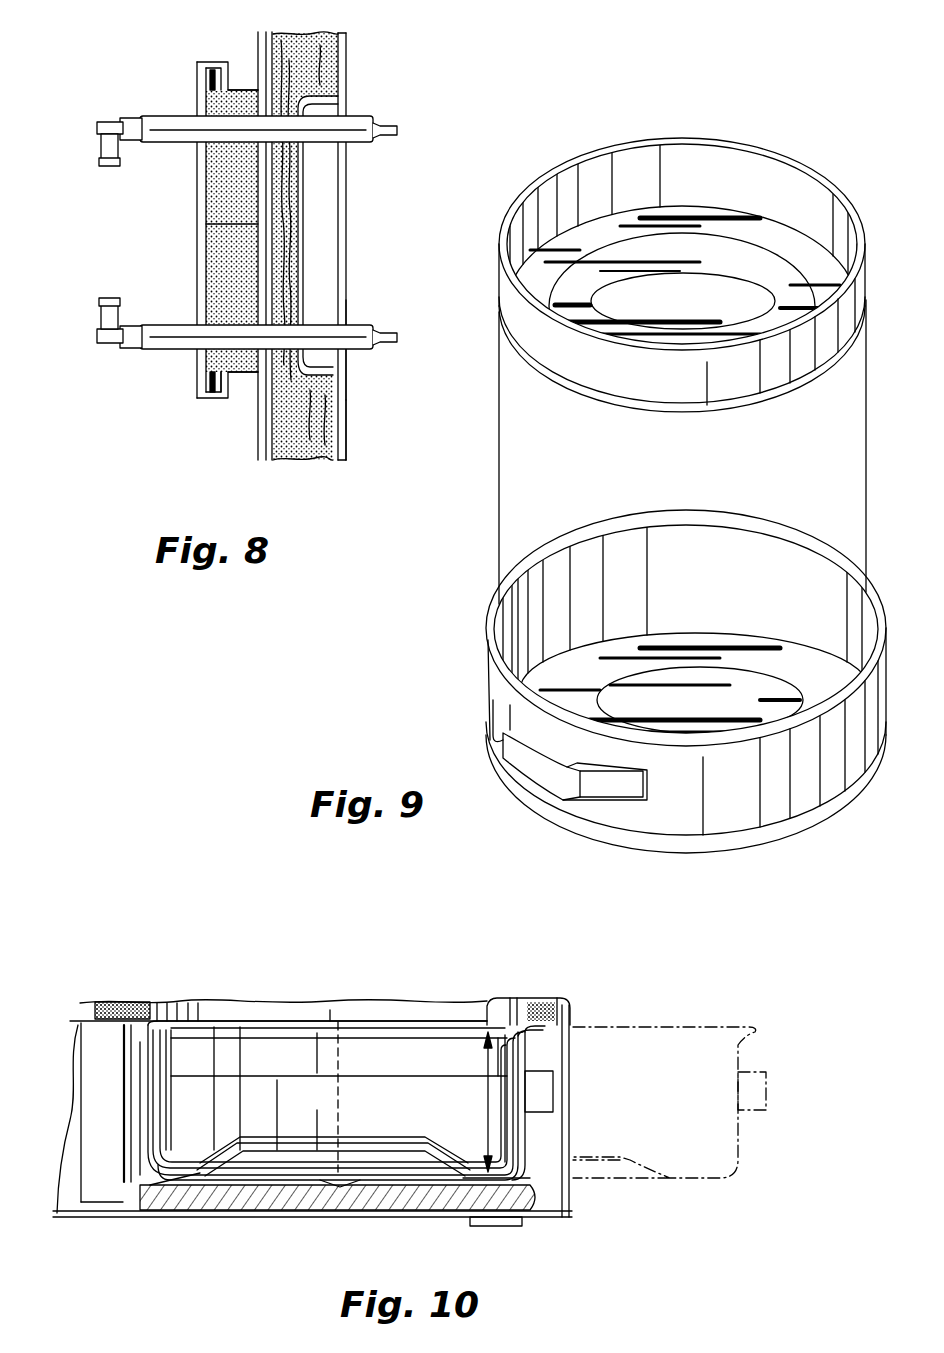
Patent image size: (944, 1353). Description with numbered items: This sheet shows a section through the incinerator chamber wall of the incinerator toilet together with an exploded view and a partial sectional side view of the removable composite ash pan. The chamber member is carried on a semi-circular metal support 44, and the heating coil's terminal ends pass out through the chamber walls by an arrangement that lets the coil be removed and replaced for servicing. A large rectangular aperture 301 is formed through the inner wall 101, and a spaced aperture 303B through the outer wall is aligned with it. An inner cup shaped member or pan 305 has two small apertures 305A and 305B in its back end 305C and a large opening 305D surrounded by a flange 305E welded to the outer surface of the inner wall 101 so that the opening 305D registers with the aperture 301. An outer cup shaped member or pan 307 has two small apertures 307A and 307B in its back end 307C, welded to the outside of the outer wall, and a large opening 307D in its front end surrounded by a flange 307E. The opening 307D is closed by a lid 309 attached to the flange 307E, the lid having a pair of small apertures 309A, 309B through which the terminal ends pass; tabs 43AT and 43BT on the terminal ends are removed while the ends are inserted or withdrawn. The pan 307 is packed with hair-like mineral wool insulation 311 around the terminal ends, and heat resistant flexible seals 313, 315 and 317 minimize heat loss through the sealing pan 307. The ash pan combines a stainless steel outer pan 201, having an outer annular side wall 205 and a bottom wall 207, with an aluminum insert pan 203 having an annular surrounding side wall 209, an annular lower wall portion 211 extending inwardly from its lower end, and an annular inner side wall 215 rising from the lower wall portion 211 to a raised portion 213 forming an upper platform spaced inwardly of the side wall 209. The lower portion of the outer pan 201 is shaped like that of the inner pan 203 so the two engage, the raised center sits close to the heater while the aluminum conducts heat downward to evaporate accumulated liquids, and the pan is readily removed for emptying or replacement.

In FIG. 8, the inner wall 101 is at (353, 443).
In FIG. 9, the outer pan 201 is at (702, 850).
In FIG. 9, the inner pan 203 is at (565, 382).
In FIG. 9, the outer annular side wall 205 is at (848, 770).
In FIG. 10, the outer annular side wall 205 is at (533, 1058).
In FIG. 9, the bottom wall 207 is at (770, 735).
In FIG. 9, the annular surrounding side wall 209 is at (532, 340).
In FIG. 10, the annular surrounding side wall 209 is at (177, 1106).
In FIG. 10, the annular lower wall portion 211 is at (160, 1138).
In FIG. 10, the raised portion 213 is at (399, 1095).
In FIG. 10, the annular inner side wall 215 is at (232, 1142).
In FIG. 8, the large rectangular shaped aperture 301 is at (347, 357).
In FIG. 8, the aperture 303B is at (300, 62).
In FIG. 8, the inner cup shaped member 305 is at (338, 100).
In FIG. 8, the small aperture 305A is at (303, 148).
In FIG. 8, the small aperture 305B is at (305, 320).
In FIG. 8, the back end 305C is at (303, 268).
In FIG. 8, the large opening 305D is at (325, 203).
In FIG. 8, the flange 305E is at (340, 67).
In FIG. 8, the outer cup shaped member 307 is at (254, 95).
In FIG. 8, the small aperture 307A is at (244, 95).
In FIG. 8, the small aperture 307B is at (205, 397).
In FIG. 8, the back end 307C is at (210, 216).
In FIG. 8, the large opening 307D is at (225, 241).
In FIG. 8, the flange 307E is at (220, 400).
In FIG. 8, the lid 309 is at (197, 190).
In FIG. 8, the lid aperture 309A is at (197, 118).
In FIG. 8, the lid aperture 309B is at (197, 318).
In FIG. 8, the heat insulation material 311 is at (212, 275).
In FIG. 8, the heat resistant flexible seal 313 is at (199, 400).
In FIG. 8, the heat resistant flexible seal 315 is at (197, 150).
In FIG. 8, the heat resistant flexible seal 317 is at (197, 368).
In FIG. 8, the tab 43AT is at (114, 92).
In FIG. 8, the tab 43BT is at (112, 347).
In FIG. 9, the semi-circular metal support 44 is at (558, 830).